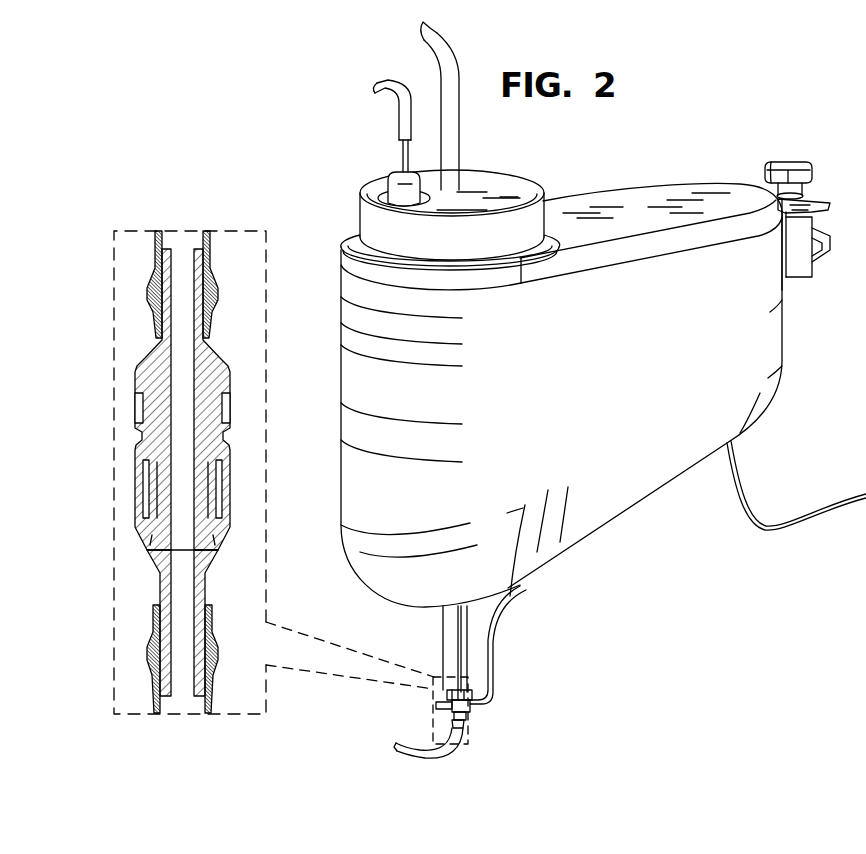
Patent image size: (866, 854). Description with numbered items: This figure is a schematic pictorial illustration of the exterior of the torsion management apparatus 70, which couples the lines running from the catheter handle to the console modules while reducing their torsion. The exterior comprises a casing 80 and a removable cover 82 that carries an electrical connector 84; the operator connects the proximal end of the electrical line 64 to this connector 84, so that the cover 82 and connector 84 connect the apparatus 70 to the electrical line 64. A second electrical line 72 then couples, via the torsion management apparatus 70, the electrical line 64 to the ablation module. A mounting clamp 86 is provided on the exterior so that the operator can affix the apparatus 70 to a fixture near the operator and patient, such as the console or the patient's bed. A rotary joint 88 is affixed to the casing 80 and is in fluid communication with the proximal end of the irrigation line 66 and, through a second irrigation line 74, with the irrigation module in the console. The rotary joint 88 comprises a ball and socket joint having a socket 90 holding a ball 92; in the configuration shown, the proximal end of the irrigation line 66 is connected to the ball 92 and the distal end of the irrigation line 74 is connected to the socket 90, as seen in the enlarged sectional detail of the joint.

The electrical line 64 is at (399, 84).
The irrigation line 66 is at (449, 41).
The torsion management apparatus 70 is at (690, 102).
The electrical line 72 is at (843, 498).
The irrigation line 74 is at (458, 758).
The casing 80 is at (342, 384).
The removable cover 82 is at (503, 191).
The connector 84 is at (378, 184).
The mounting clamp 86 is at (805, 162).
The rotary joint 88 is at (440, 718).
The socket 90 is at (222, 528).
The ball 92 is at (214, 365).